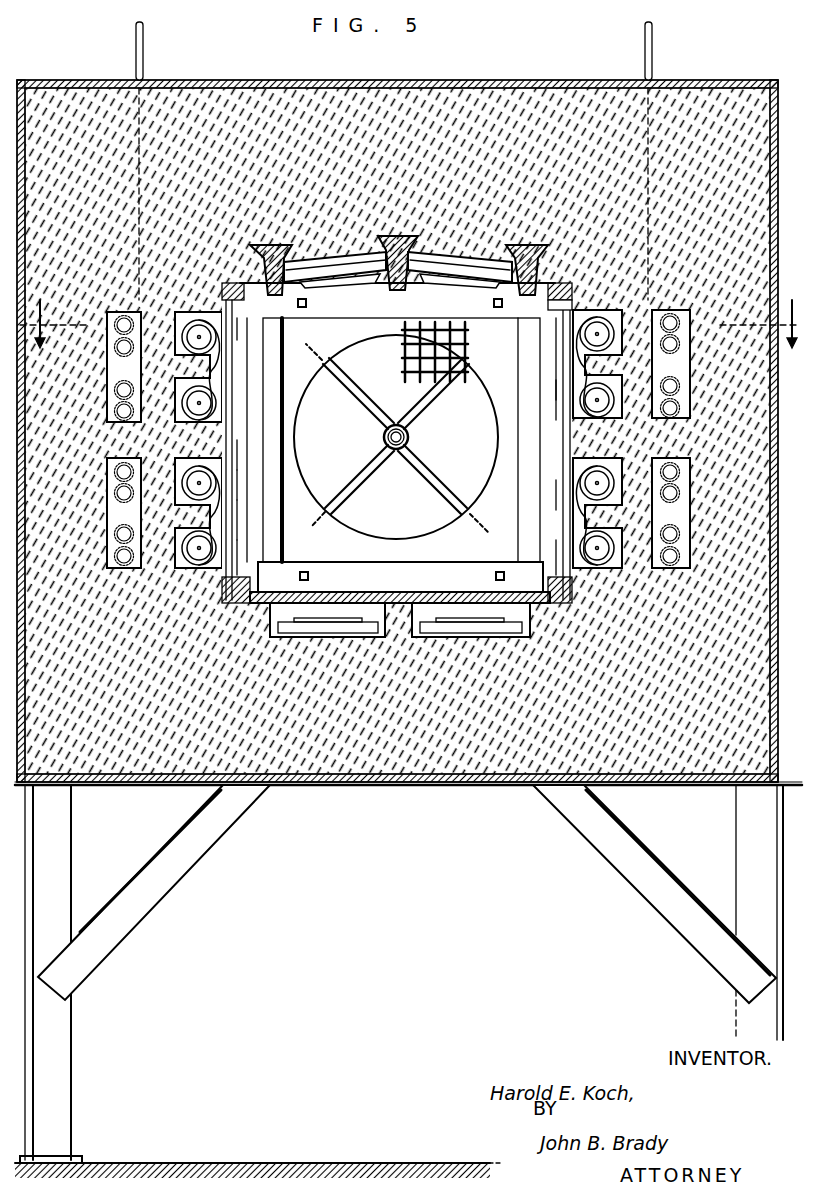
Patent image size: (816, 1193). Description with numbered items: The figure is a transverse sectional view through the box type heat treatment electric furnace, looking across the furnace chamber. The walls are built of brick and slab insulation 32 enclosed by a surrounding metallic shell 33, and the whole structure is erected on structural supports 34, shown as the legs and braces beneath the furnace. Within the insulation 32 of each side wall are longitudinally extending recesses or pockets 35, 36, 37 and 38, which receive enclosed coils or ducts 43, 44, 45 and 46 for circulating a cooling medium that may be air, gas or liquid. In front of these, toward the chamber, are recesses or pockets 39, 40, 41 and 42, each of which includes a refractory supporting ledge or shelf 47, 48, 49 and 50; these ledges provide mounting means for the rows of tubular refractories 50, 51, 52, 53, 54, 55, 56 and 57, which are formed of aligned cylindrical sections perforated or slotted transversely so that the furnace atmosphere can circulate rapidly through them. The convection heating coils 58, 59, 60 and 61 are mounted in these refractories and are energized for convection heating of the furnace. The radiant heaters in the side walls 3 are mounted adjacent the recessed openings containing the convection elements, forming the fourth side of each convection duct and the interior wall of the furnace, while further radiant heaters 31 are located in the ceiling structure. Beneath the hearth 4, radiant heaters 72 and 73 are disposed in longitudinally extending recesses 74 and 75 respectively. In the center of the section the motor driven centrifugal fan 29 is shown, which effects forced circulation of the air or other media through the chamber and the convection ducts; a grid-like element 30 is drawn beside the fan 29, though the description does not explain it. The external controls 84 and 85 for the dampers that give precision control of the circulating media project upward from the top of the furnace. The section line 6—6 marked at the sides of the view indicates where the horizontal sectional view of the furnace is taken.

The radiant heaters in the side walls 3 is at (236, 368).
The hearth 4 is at (360, 602).
The section line 6— 6 is at (410, 316).
The motor driven fan 29 is at (362, 502).
The grid 30 is at (400, 352).
The radiant heaters in the ceiling structure 31 is at (355, 262).
The brick and slab insulation 32 is at (702, 118).
The metallic shell 33 is at (468, 82).
The structural supports 34 is at (60, 925).
The recess or pocket 35 is at (108, 336).
The recess or pocket 36 is at (108, 503).
The recess or pocket 37 is at (690, 347).
The recess or pocket 38 is at (690, 503).
The recess or pocket 39 is at (200, 312).
The recess or pocket 40 is at (186, 570).
The recess or pocket 41 is at (612, 310).
The recess or pocket 42 is at (606, 570).
The enclosed coil or duct 43 is at (122, 363).
The enclosed coil or duct 44 is at (122, 534).
The enclosed coil or duct 45 is at (677, 390).
The enclosed coil or duct 46 is at (677, 530).
The refractory supporting ledge 47 is at (236, 400).
The refractory supporting ledge 48 is at (236, 480).
The refractory supporting ledge 49 is at (565, 400).
The refractory supporting ledge 50 is at (222, 322).
The row of tubular refractories 51 is at (240, 420).
The row of tubular refractories 52 is at (236, 455).
The row of tubular refractories 53 is at (236, 556).
The row of tubular refractories 54 is at (583, 305).
The row of tubular refractories 55 is at (505, 432).
The row of tubular refractories 56 is at (565, 470).
The row of tubular refractories 57 is at (560, 558).
The heating coil 58 is at (283, 330).
The heating coil 59 is at (240, 520).
The heating coil 60 is at (565, 390).
The heating coil 61 is at (565, 495).
The radiant heater 72 is at (330, 628).
The radiant heater 73 is at (476, 625).
The longitudinally extending recess 74 is at (296, 622).
The longitudinally extending recess 75 is at (420, 618).
The external damper control 84 is at (144, 44).
The external damper control 85 is at (653, 44).